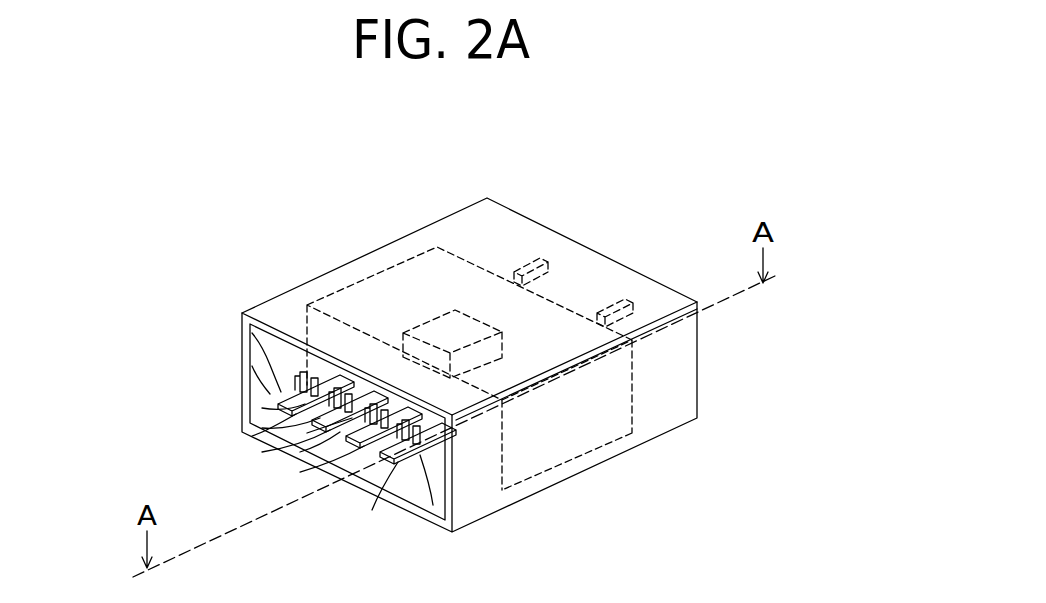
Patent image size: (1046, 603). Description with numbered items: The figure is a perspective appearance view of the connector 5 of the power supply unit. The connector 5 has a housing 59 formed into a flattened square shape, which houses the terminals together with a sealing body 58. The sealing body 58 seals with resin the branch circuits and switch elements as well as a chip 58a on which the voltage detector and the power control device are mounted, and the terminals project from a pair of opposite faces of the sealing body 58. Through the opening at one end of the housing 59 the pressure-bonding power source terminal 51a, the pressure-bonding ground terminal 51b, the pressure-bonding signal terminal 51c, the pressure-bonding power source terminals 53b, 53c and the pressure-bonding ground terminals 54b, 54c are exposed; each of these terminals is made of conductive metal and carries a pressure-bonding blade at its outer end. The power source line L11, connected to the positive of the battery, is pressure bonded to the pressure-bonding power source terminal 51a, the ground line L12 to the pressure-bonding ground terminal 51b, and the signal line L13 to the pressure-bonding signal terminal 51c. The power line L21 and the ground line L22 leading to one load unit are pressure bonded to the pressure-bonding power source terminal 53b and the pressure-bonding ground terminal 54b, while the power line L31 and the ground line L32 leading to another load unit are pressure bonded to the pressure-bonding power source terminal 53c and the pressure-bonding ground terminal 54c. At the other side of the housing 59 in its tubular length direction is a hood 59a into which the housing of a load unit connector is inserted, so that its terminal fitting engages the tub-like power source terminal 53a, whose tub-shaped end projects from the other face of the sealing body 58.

The connector 5 is at (667, 170).
The sealing body 58 is at (634, 412).
The chip 58a is at (437, 316).
The housing 59 is at (689, 358).
The hood 59a is at (657, 292).
The tub-like power source terminal 53a is at (522, 266).
The pressure-bonding ground terminal 54b is at (622, 304).
The pressure-bonding ground terminal 54c is at (448, 492).
The pressure-bonding power source terminal 51a is at (252, 335).
The power source line L11 is at (252, 366).
The ground line L12 is at (262, 408).
The pressure-bonding ground terminal 51b is at (262, 428).
The signal line L13 is at (300, 452).
The pressure-bonding signal terminal 51c is at (307, 433).
The power line L21 is at (330, 440).
The pressure-bonding power source terminal 53b is at (334, 455).
The ground line L22 is at (362, 462).
The power line L31 is at (370, 470).
The pressure-bonding power source terminal 53c is at (384, 475).
The ground line L32 is at (402, 470).